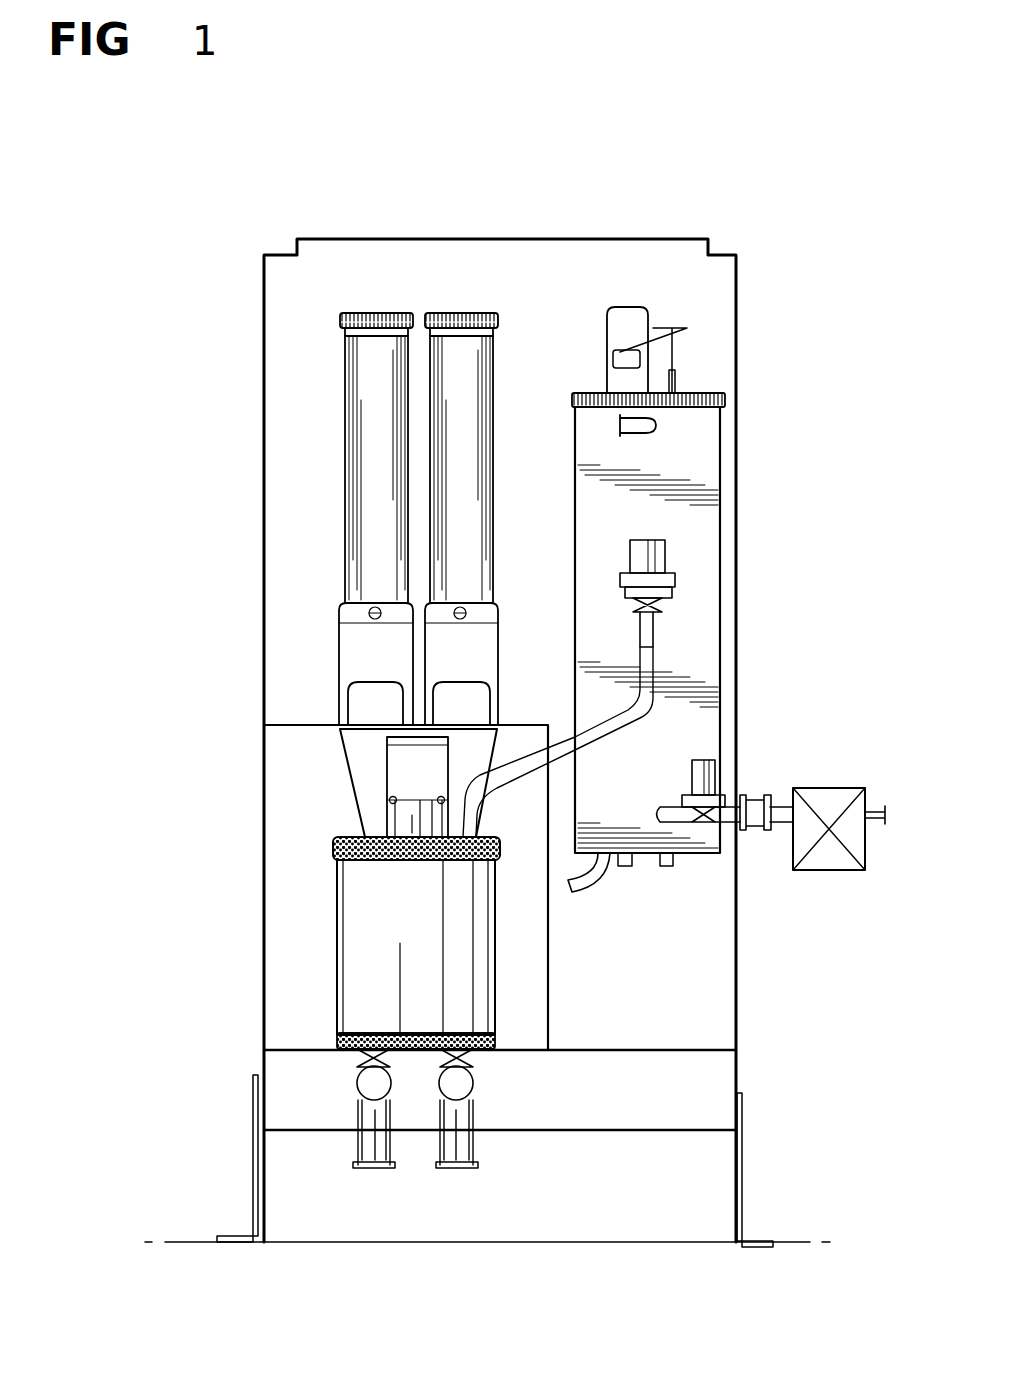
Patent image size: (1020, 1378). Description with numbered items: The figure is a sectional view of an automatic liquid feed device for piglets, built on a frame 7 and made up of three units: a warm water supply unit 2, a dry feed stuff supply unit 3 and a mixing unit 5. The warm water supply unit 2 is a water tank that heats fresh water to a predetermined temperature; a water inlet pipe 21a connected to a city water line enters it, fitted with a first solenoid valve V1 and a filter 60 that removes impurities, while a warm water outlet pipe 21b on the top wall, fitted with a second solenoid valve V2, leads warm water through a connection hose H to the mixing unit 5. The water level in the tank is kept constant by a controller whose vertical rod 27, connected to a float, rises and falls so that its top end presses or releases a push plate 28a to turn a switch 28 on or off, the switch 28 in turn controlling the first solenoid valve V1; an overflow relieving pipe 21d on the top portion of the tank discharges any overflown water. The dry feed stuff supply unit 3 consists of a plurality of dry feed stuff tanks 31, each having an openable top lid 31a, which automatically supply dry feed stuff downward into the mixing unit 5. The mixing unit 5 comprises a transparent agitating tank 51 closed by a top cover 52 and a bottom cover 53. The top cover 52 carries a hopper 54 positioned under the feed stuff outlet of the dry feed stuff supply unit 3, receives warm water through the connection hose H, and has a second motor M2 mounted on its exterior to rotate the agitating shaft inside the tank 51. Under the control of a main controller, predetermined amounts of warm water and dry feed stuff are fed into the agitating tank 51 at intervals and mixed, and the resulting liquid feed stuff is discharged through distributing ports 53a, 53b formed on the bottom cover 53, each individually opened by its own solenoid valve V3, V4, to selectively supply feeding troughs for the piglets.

The frame 7 is at (742, 285).
The warm water supply unit 2 is at (737, 455).
The dry feed stuff supply unit 3 is at (322, 578).
The dry feed stuff tank 31 is at (440, 465).
The openable top lid 31a is at (455, 313).
The switch 28 is at (611, 357).
The push plate 28a is at (627, 350).
The vertical rod 27 is at (675, 350).
The overflow relieving pipe 21d is at (655, 422).
The second solenoid valve V2 is at (675, 604).
The warm water outlet pipe 21b is at (654, 628).
The connection hose H is at (652, 716).
The first solenoid valve V1 is at (720, 820).
The water inlet pipe 21a is at (678, 822).
The filter 60 is at (840, 787).
The mixing unit 5 is at (320, 945).
The hopper 54 is at (362, 758).
The second motor M2 is at (397, 822).
The top cover 52 is at (333, 853).
The agitating tank 51 is at (355, 988).
The bottom cover 53 is at (340, 1033).
The solenoid valve V3 is at (362, 1066).
The solenoid valve V4 is at (470, 1062).
The distributing port 53a is at (375, 1160).
The distributing port 53b is at (460, 1160).